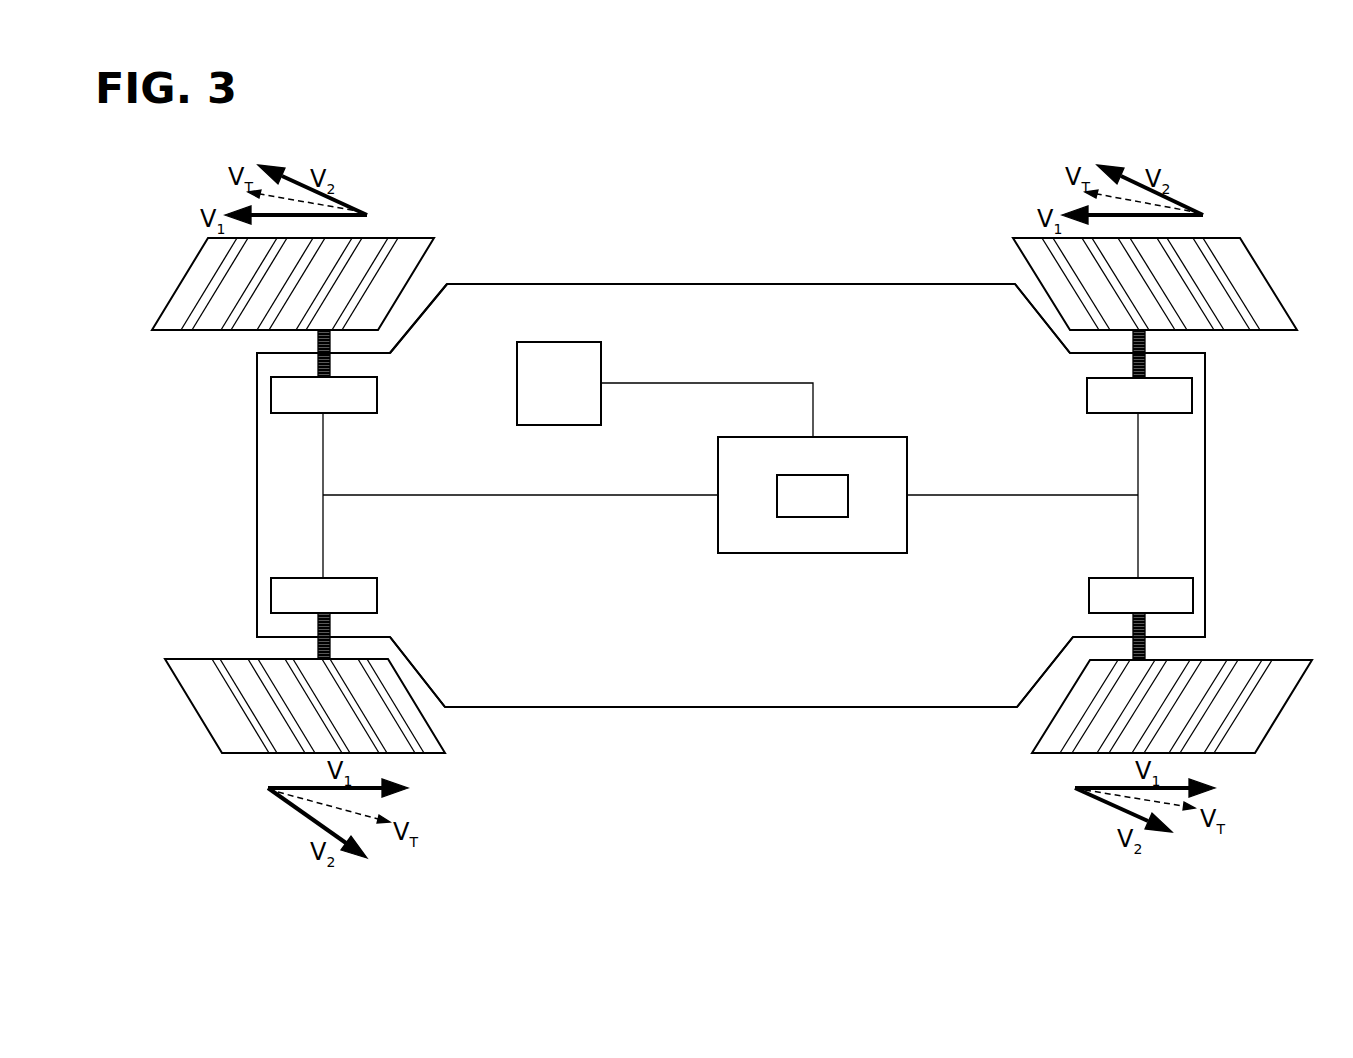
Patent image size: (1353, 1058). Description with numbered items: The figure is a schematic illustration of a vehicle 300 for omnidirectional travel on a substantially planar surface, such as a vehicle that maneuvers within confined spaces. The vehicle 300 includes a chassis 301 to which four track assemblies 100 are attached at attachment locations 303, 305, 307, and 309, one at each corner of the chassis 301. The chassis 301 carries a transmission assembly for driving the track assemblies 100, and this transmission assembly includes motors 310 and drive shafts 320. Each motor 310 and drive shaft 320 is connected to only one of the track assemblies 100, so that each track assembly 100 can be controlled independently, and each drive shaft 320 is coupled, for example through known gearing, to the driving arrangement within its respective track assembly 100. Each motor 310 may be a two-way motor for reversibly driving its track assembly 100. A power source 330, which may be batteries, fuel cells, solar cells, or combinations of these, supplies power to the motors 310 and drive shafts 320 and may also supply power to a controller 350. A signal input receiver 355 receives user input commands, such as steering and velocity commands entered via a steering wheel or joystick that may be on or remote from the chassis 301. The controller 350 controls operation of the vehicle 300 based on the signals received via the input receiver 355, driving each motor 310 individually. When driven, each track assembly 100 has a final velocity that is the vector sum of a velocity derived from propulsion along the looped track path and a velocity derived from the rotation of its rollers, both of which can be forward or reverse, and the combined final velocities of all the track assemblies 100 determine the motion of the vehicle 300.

The track assembly 100 is at (404, 268).
The vehicle 300 is at (503, 628).
The chassis 301 is at (684, 284).
The attachment location 303 is at (392, 331).
The attachment location 305 is at (1063, 329).
The attachment location 307 is at (1078, 652).
The attachment location 309 is at (392, 652).
The motor 310 is at (358, 403).
The drive shaft 320 is at (318, 362).
The power source 330 is at (812, 496).
The controller 350 is at (812, 495).
The signal input receiver 355 is at (665, 389).